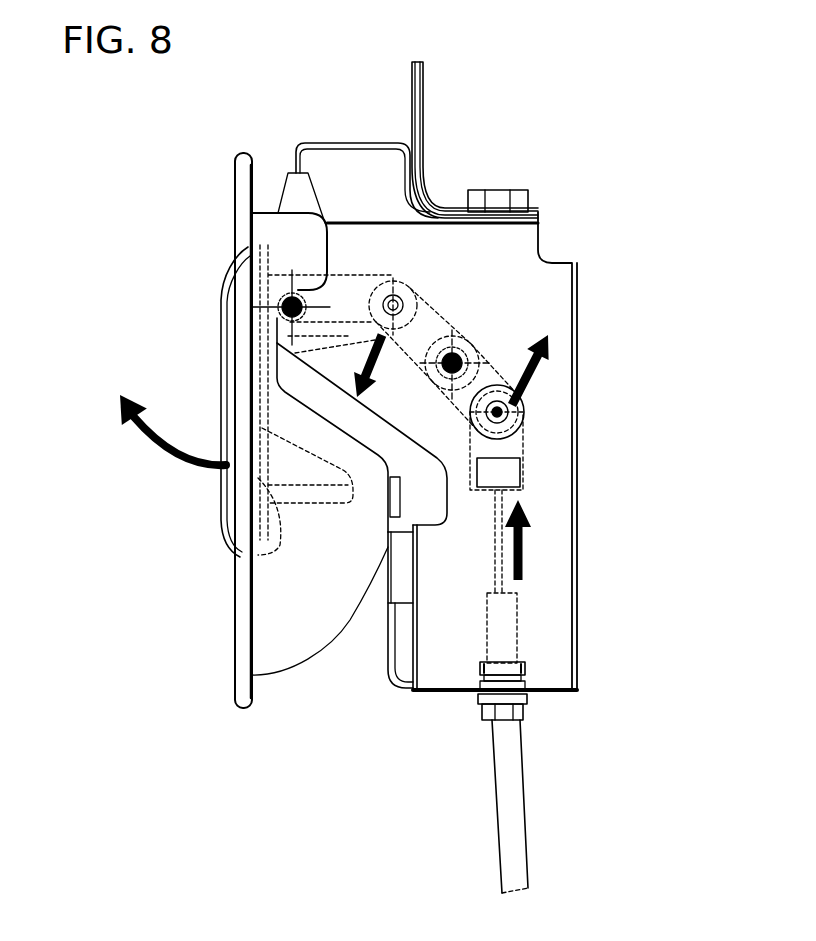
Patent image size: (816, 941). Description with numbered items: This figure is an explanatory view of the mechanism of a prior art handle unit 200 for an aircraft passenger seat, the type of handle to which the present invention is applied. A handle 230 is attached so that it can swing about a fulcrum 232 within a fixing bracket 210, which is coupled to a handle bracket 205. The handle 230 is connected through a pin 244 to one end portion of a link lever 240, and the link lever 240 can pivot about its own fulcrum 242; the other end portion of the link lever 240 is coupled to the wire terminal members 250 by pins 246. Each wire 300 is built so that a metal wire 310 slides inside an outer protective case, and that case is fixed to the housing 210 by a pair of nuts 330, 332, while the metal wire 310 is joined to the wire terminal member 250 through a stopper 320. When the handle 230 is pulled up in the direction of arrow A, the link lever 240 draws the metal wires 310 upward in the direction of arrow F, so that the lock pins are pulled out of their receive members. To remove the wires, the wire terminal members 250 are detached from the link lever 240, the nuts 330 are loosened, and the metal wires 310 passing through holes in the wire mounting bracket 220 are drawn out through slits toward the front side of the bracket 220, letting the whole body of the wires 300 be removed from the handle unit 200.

The handle unit 200 is at (614, 162).
The handle bracket 205 is at (245, 205).
The fixing bracket 210 is at (578, 310).
The wire mounting bracket 220 is at (393, 697).
The handle 230 is at (227, 397).
The fulcrum 232 is at (278, 296).
The link lever 240 is at (433, 323).
The fulcrum 242 is at (470, 335).
The pin 244 is at (398, 277).
The pins 246 is at (528, 408).
The wire terminal member 250 is at (525, 448).
The wire 300 is at (508, 808).
The metal wire 310 is at (500, 503).
The stopper 320 is at (507, 472).
The nut 330 is at (505, 672).
The nut 332 is at (525, 712).